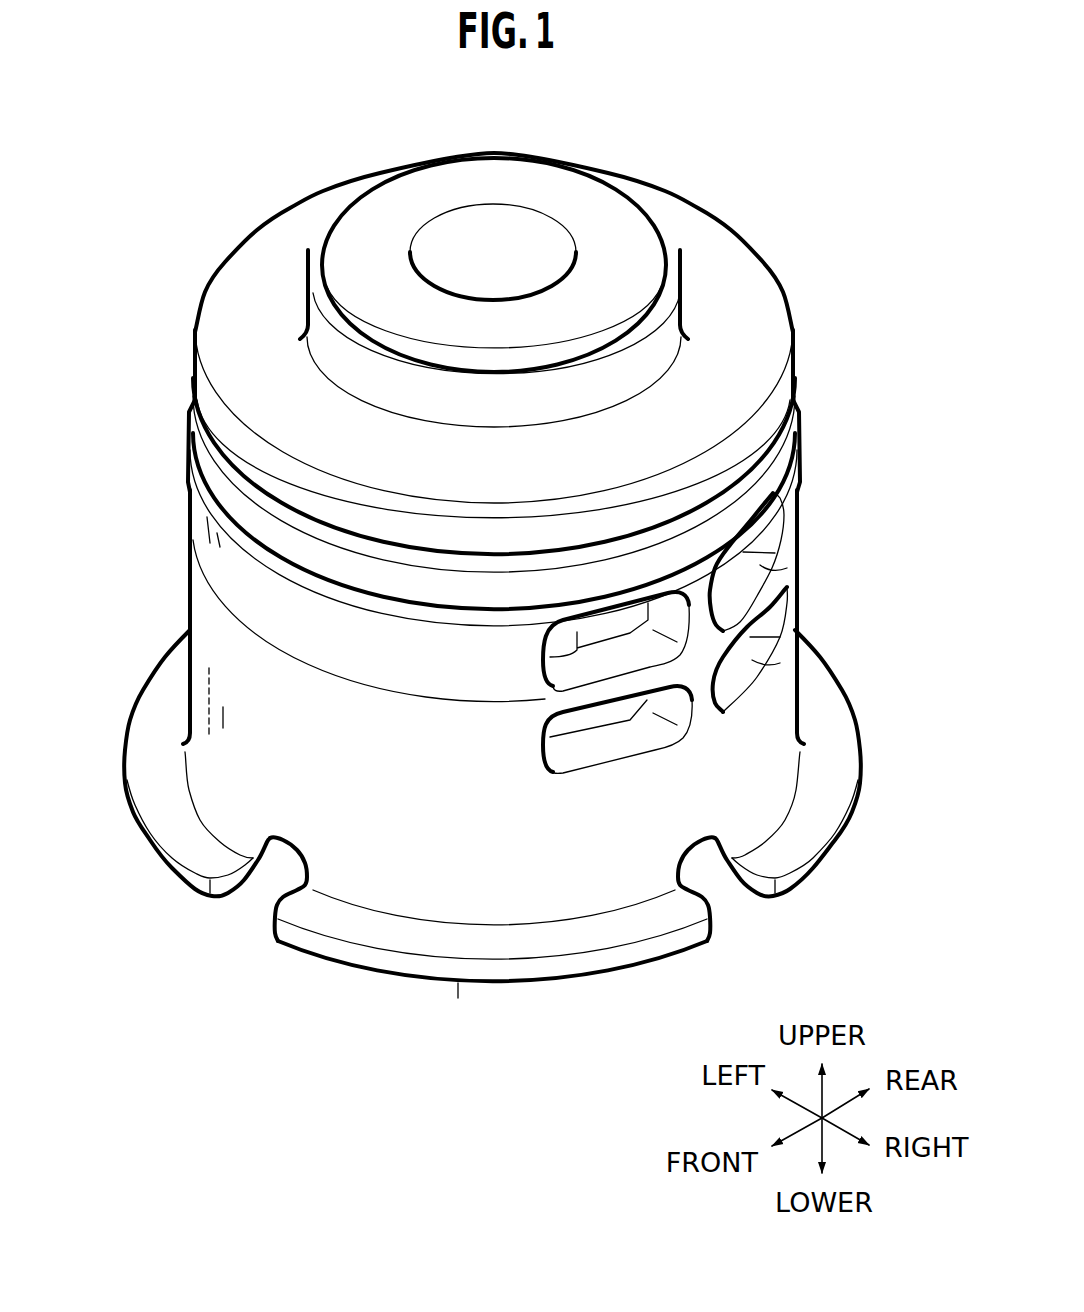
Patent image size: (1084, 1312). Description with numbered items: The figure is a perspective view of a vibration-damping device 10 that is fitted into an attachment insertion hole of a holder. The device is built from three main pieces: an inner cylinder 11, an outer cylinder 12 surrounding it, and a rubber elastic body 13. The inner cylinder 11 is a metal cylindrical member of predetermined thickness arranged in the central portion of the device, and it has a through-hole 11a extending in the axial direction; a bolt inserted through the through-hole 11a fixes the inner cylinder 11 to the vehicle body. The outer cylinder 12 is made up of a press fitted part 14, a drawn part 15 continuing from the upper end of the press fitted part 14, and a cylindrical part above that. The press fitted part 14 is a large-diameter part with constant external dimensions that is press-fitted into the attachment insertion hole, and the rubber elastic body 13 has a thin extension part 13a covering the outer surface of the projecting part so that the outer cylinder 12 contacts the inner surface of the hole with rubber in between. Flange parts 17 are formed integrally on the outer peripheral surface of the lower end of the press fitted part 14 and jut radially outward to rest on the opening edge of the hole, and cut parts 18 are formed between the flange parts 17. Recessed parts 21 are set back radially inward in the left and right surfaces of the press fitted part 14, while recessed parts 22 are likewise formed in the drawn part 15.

The vibration-damping device 10 is at (489, 579).
The inner cylinder 11 is at (602, 217).
The through-hole 11a is at (503, 237).
The outer cylinder 12 is at (464, 687).
The rubber elastic body 13 is at (557, 350).
The extension part 13a is at (790, 440).
The press fitted part 14 is at (198, 670).
The drawn part 15 is at (207, 518).
The flange parts 17 is at (126, 800).
The cut parts 18 is at (270, 891).
The recessed parts 21 is at (590, 723).
The recessed parts 22 is at (577, 630).